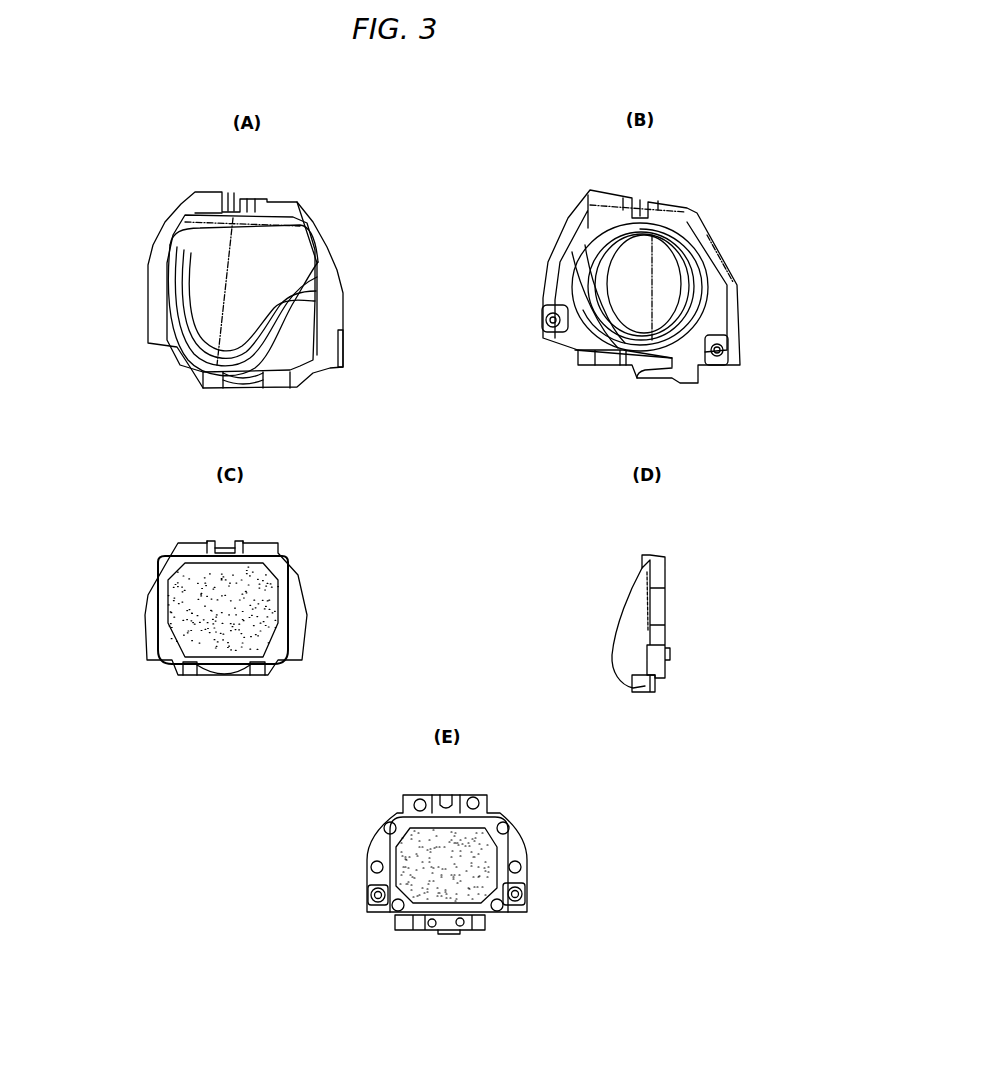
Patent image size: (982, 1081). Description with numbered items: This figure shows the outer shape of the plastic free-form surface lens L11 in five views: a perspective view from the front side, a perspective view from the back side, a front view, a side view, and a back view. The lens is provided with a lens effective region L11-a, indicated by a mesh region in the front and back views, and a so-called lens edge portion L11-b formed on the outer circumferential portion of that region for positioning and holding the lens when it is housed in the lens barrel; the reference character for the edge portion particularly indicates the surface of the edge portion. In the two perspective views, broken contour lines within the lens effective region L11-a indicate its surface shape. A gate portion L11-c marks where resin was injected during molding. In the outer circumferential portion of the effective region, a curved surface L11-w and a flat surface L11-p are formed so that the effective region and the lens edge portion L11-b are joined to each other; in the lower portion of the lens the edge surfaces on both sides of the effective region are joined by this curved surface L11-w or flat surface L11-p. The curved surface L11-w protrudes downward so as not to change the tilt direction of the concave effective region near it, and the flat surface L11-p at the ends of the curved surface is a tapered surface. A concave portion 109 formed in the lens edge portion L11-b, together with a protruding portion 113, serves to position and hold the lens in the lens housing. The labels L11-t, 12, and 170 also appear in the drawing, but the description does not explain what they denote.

The free-form surface lens L11 is at (442, 572).
The lens effective region L11-a is at (177, 260).
The lens edge portion L11-b is at (158, 327).
The gate portion L11-c is at (223, 388).
The flat surface L11-p is at (203, 383).
The tapered portion of lens L11-t is at (207, 210).
The curved surface L11-w is at (253, 560).
The concave portion 109 is at (237, 207).
The fixing screw 12 is at (548, 322).
The protruding portion 113 is at (717, 363).
The hole 170 is at (475, 807).